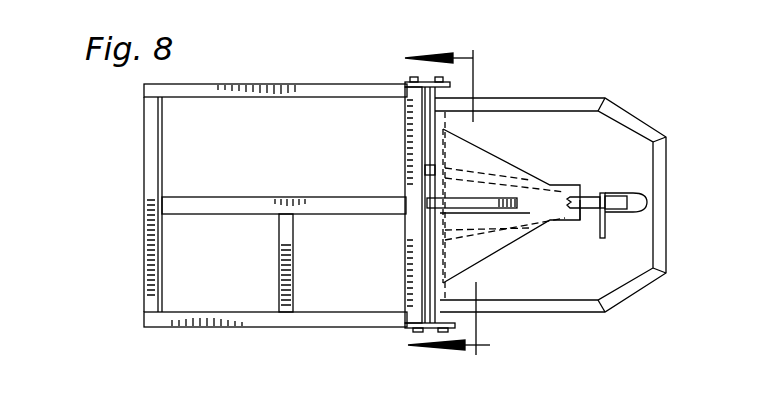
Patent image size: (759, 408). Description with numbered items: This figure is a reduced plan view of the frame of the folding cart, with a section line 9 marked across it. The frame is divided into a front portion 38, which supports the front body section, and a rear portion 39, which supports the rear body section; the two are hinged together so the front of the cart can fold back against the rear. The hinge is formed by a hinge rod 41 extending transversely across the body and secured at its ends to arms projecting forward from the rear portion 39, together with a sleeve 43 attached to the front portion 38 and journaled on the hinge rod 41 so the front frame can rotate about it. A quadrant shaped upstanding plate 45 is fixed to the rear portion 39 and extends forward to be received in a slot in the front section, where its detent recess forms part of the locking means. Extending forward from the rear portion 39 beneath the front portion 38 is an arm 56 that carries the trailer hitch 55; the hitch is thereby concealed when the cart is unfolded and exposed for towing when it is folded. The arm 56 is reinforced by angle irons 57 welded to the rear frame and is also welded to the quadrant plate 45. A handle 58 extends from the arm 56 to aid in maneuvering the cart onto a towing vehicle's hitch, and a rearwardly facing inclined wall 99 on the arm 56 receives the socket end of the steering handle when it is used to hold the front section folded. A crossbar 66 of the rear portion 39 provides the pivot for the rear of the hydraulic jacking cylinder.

The front portion of the frame 38 is at (562, 98).
The rear portion of the frame 39 is at (298, 320).
The hinge rod 41 is at (435, 81).
The sleeve 43 is at (450, 288).
The quadrant shaped upstanding plate 45 is at (487, 198).
The trailer hitch 55 is at (647, 200).
The arm 56 is at (580, 220).
The angle irons 57 is at (549, 185).
The handle 58 is at (598, 225).
The crossbar 66 is at (280, 240).
The rearwardly facing inclined wall 99 is at (596, 193).
The section line 9- 9 is at (458, 204).